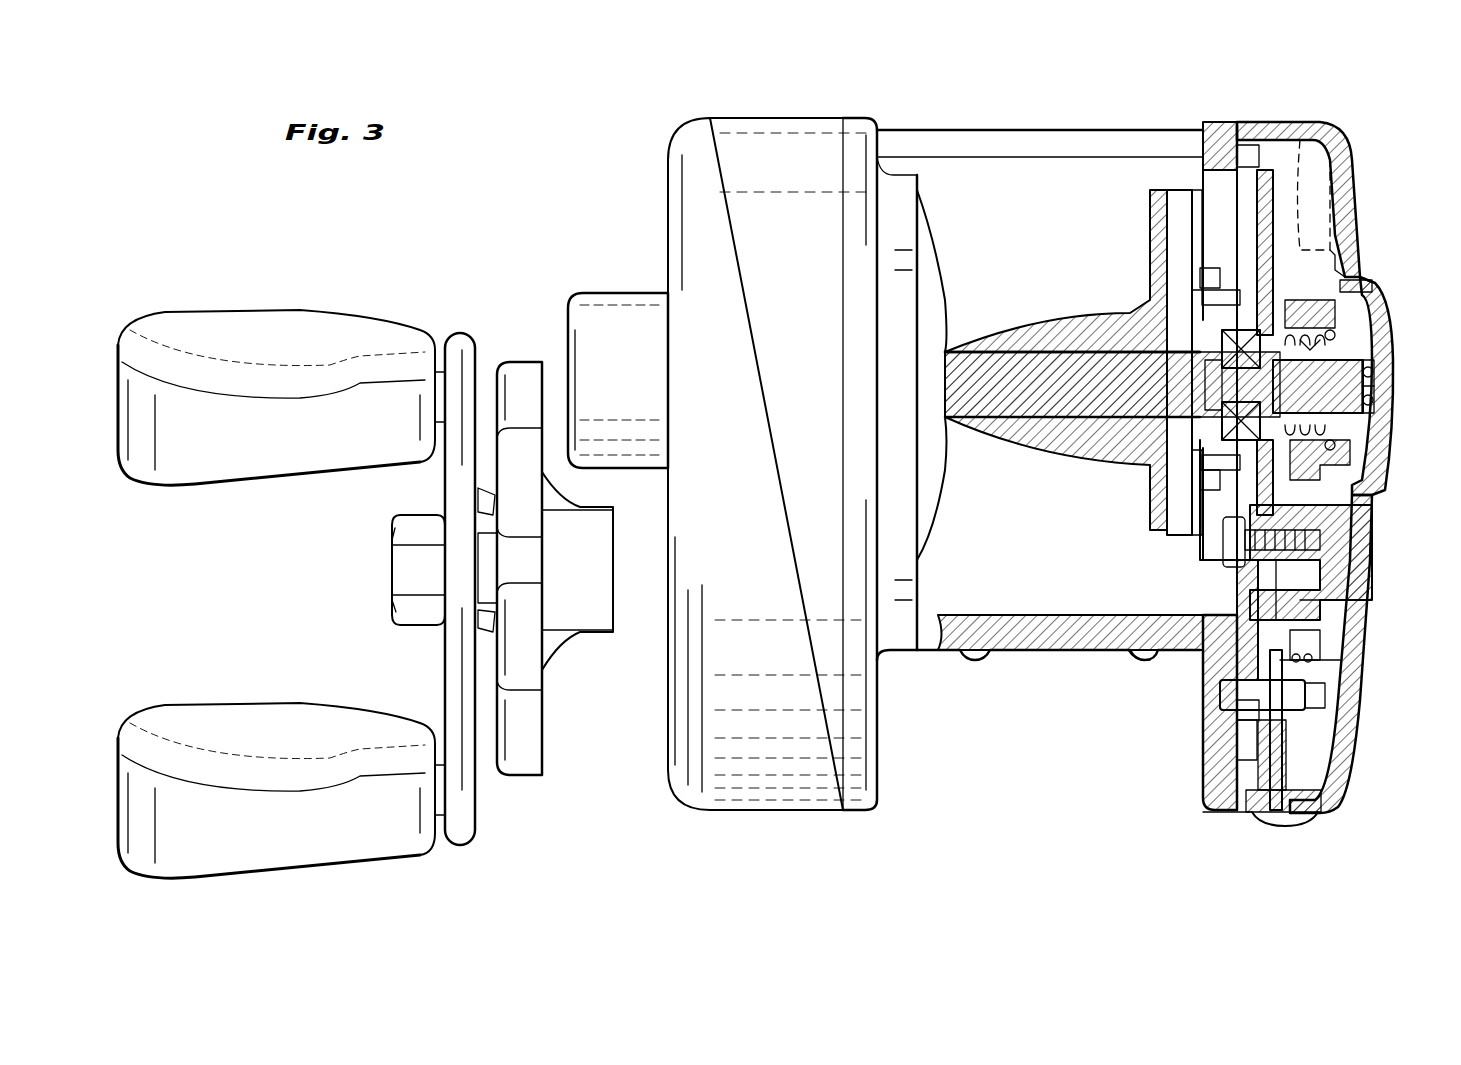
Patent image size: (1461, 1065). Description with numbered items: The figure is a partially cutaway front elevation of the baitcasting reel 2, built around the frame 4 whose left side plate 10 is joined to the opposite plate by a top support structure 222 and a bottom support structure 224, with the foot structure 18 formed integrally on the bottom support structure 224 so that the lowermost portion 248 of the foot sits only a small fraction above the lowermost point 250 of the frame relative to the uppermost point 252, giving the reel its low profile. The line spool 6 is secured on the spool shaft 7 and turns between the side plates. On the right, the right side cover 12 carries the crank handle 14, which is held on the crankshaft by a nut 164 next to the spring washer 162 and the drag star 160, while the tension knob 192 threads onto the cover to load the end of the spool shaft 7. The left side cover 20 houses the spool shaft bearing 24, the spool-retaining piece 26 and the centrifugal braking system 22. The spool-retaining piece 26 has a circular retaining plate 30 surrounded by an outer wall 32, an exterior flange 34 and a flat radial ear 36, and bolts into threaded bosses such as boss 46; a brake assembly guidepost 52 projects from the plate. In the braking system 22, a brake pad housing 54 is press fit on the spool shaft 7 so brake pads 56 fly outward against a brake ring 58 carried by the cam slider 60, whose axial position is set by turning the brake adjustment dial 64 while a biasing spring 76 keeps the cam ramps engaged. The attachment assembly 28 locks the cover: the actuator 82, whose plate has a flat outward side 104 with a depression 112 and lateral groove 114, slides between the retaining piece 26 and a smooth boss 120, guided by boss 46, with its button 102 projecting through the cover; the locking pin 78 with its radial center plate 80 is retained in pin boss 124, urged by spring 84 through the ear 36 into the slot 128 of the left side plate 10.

The baitcasting reel 2 is at (1364, 131).
The baitcasting reel frame 4 is at (1205, 778).
The line spool 6 is at (1140, 300).
The spool shaft 7 is at (1068, 378).
The left side plate 10 is at (1215, 812).
The right side cover 12 is at (702, 142).
The crank handle 14 is at (340, 330).
The foot structure 18 is at (1135, 660).
The left side cover 20 is at (1280, 122).
The centrifugal braking system 22 is at (1395, 330).
The spool shaft bearing 24 is at (1370, 265).
The spool-retaining piece 26 is at (1275, 478).
The attachment assembly 28 is at (1352, 178).
The circular retaining plate 30 is at (1222, 175).
The outer wall 32 is at (1215, 125).
The exterior flange 34 is at (1250, 160).
The radial ear 36 is at (1245, 625).
The threaded boss 46 is at (1355, 525).
The brake assembly guidepost 52 is at (1340, 375).
The brake pad housing 54 is at (1190, 470).
The brake pads 56 is at (1200, 282).
The brake ring 58 is at (1180, 195).
The cam slider 60 is at (1360, 458).
The brake adjustment dial 64 is at (1380, 402).
The biasing spring 76 is at (1375, 287).
The locking pin 78 is at (1310, 695).
The radial center plate 80 is at (1310, 745).
The actuator 82 is at (1330, 805).
The biasing spring 84 is at (1320, 658).
The button 102 is at (1285, 815).
The flat outward side 104 is at (1340, 570).
The depression 112 is at (1270, 745).
The lateral groove 114 is at (1330, 705).
The smooth boss 120 is at (1350, 588).
The pin boss 124 is at (1335, 665).
The slot 128 is at (1225, 705).
The drag star 160 is at (522, 748).
The spring washer 162 is at (478, 496).
The nut 164 is at (410, 586).
The tension knob 192 is at (622, 322).
The top support structure 222 is at (1050, 140).
The bottom support structure 224 is at (1040, 633).
The lowermost portion of foot 248 is at (972, 655).
The lowermost point of frame 250 is at (862, 805).
The uppermost point of frame 252 is at (875, 122).